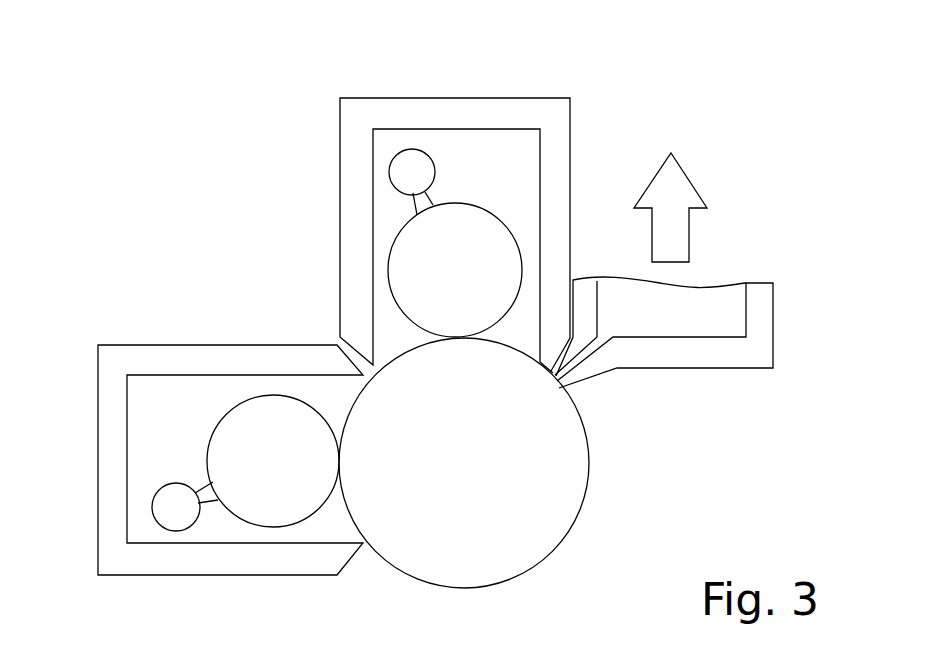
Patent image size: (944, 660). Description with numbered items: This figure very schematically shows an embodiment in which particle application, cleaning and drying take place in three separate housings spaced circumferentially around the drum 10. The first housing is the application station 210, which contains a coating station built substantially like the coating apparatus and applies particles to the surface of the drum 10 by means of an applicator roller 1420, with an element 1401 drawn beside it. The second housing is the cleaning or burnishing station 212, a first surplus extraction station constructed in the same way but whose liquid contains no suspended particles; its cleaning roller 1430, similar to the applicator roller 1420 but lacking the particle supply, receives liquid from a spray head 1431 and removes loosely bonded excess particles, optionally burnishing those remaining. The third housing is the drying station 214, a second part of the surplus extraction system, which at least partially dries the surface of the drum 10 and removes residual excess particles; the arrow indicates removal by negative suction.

The drum 10 is at (601, 499).
The application station 210 is at (187, 322).
The cleaning or burnishing station 212 is at (464, 81).
The drying station 214 is at (703, 397).
The first auxiliary roller 1401 is at (168, 502).
The applicator roller 1420 is at (270, 480).
The cleaning roller 1430 is at (415, 257).
The spray head 1431 is at (395, 170).